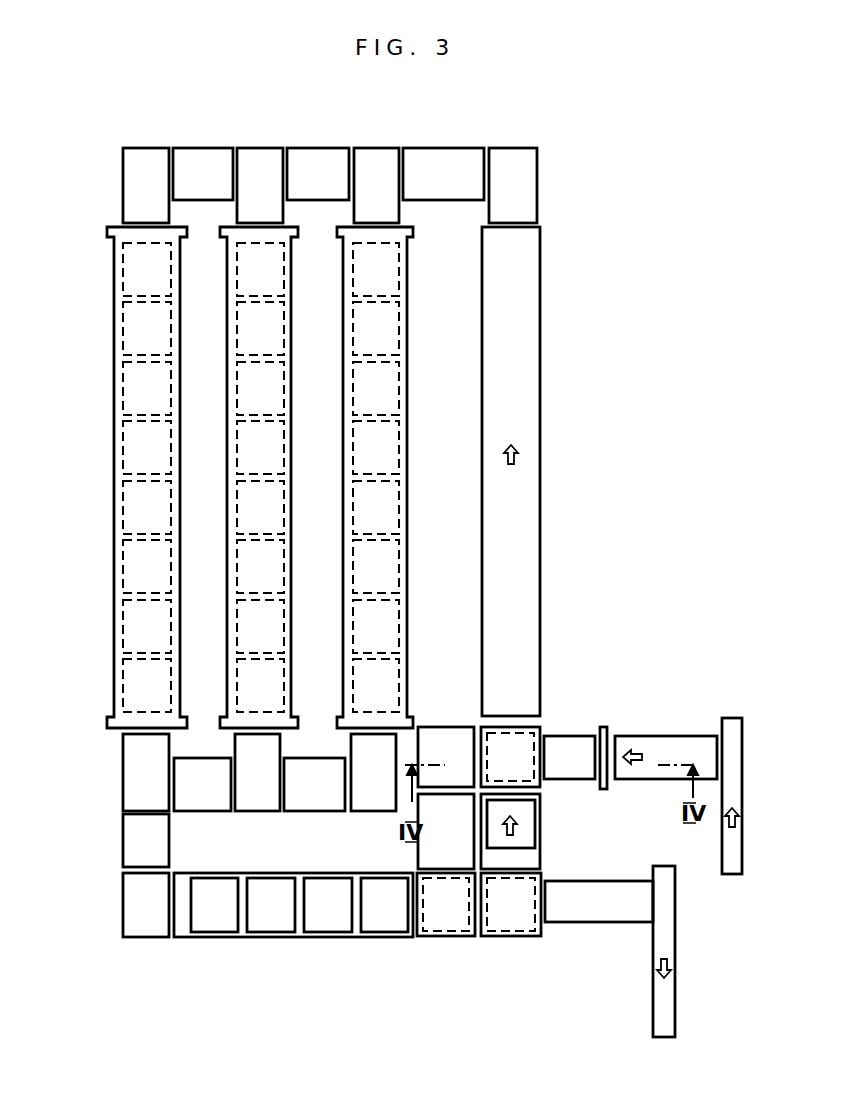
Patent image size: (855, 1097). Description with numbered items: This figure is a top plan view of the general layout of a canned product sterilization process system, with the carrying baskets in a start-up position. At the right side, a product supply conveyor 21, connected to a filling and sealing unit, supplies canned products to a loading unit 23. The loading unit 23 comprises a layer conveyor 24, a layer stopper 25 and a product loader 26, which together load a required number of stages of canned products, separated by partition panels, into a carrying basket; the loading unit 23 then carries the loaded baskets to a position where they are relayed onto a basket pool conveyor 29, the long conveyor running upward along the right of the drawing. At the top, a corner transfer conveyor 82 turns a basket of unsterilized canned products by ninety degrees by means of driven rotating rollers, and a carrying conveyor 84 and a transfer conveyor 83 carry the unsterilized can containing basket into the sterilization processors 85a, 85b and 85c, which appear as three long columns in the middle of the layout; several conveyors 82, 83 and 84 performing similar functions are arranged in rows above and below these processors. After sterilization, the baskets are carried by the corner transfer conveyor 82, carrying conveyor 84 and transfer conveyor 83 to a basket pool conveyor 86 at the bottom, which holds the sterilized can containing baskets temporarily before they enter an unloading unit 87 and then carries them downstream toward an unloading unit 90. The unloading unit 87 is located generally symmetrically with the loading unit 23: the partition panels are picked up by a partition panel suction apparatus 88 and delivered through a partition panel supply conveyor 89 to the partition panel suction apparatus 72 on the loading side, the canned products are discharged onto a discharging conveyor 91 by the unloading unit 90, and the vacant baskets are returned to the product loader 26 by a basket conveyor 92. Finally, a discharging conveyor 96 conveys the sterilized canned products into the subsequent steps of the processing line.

The product supply conveyor 21 is at (738, 760).
The loading unit 23 is at (616, 726).
The layer conveyor 24 is at (686, 743).
The layer stopper 25 is at (603, 729).
The product loader 26 is at (542, 728).
The basket pool conveyor 29 is at (533, 603).
The partition panel suction apparatus 72 is at (447, 735).
The corner transfer conveyor 82 is at (153, 155).
The transfer conveyor 83 is at (268, 155).
The carrying conveyor 84 is at (208, 155).
The sterilization processor 85a is at (117, 280).
The sterilization processor 85b is at (288, 341).
The sterilization processor 85c is at (404, 291).
The basket pool conveyor 86 is at (302, 935).
The unloading unit 87 is at (485, 940).
The partition panel suction apparatus 88 is at (435, 937).
The partition panel supply conveyor 89 is at (427, 856).
The unloading unit 90 is at (540, 938).
The discharging conveyor 91 is at (605, 910).
The basket conveyor 92 is at (533, 860).
The discharging conveyor 96 is at (668, 948).